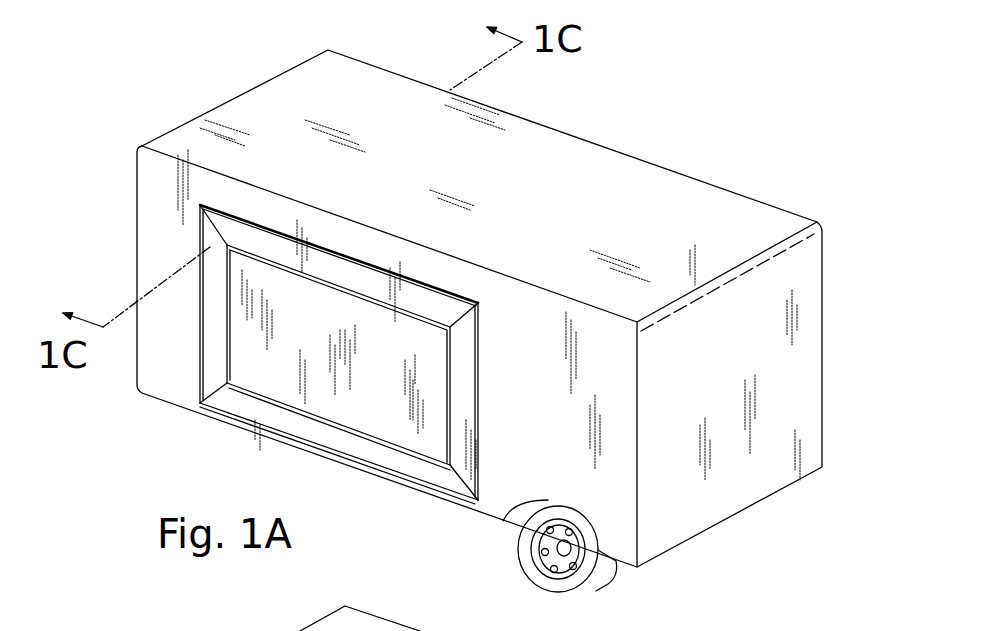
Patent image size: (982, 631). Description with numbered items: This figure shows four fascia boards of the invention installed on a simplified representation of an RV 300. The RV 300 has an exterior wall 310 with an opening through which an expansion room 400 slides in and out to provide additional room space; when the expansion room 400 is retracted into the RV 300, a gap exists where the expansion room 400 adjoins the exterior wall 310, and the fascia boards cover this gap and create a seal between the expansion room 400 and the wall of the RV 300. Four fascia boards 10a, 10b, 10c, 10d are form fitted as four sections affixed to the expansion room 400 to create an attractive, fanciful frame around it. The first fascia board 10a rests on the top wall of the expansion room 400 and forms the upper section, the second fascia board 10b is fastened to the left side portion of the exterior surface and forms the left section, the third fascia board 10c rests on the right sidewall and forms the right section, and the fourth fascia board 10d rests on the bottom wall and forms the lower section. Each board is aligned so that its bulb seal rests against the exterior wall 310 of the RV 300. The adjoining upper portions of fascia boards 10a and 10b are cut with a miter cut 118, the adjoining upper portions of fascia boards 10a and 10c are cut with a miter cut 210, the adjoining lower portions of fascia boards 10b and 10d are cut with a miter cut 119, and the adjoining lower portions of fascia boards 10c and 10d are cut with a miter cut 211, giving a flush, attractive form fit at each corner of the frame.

The RV 300 is at (748, 203).
The first fascia board 10a is at (200, 231).
The second fascia board 10b is at (205, 343).
The third fascia board 10c is at (412, 480).
The fourth fascia board 10d is at (247, 408).
The miter cut 118 is at (205, 246).
The miter cut 119 is at (203, 385).
The miter cut 210 is at (466, 321).
The miter cut 211 is at (469, 503).
The exterior wall 310 is at (458, 463).
The expansion room 400 is at (345, 400).